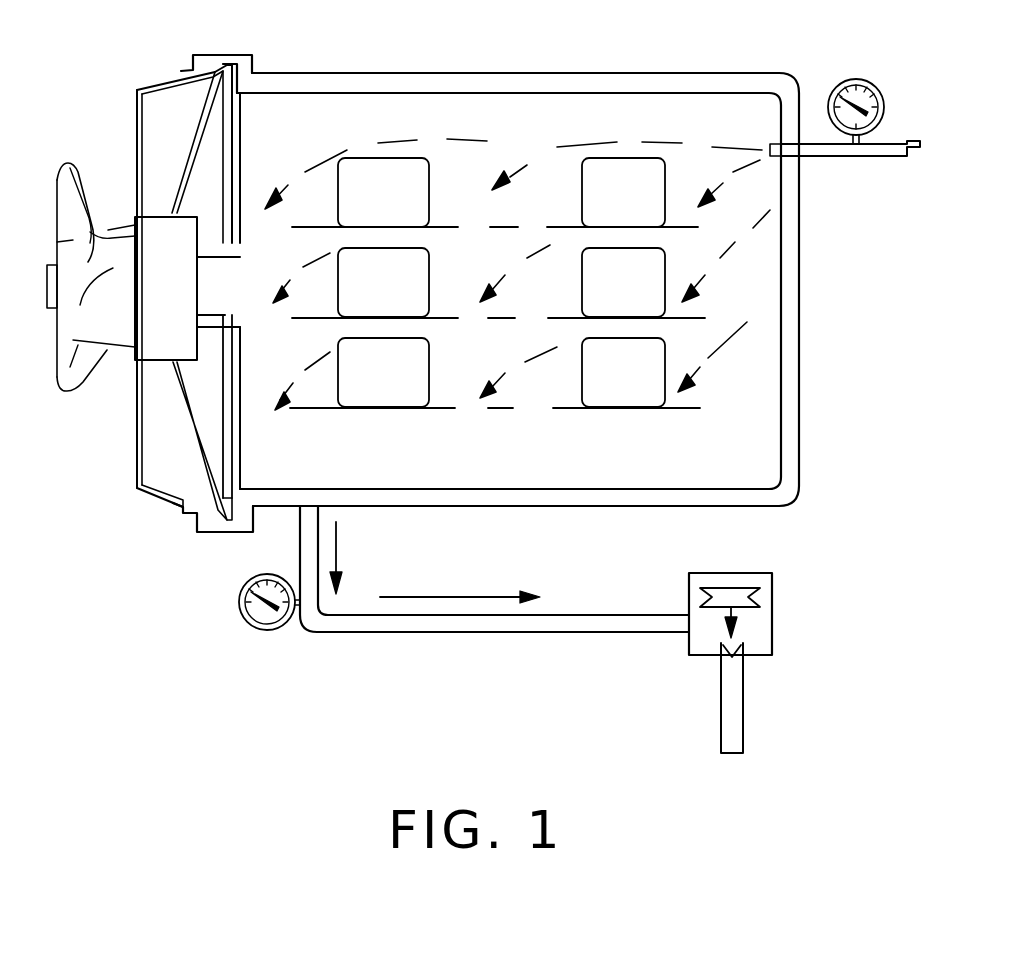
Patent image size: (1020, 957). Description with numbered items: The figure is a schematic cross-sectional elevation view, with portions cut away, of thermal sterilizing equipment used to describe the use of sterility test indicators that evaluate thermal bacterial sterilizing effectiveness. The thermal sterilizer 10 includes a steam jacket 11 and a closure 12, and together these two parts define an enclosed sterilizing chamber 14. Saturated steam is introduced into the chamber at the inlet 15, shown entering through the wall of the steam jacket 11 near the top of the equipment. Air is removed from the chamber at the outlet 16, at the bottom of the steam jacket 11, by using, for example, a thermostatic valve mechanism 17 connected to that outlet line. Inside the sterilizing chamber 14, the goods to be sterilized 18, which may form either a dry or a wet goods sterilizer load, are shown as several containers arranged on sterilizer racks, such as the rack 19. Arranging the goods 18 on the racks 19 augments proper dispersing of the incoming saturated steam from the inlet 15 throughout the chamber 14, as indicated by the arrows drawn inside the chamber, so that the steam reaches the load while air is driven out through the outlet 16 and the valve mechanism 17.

The thermal sterilizer 10 is at (173, 631).
The steam jacket 11 is at (415, 72).
The closure 12 is at (137, 157).
The sterilizing chamber 14 is at (553, 133).
The steam inlet 15 is at (845, 157).
The air removal outlet 16 is at (340, 548).
The thermostatic valve mechanism 17 is at (773, 612).
The goods to be sterilized 18 is at (400, 298).
The sterilizer rack 19 is at (565, 409).